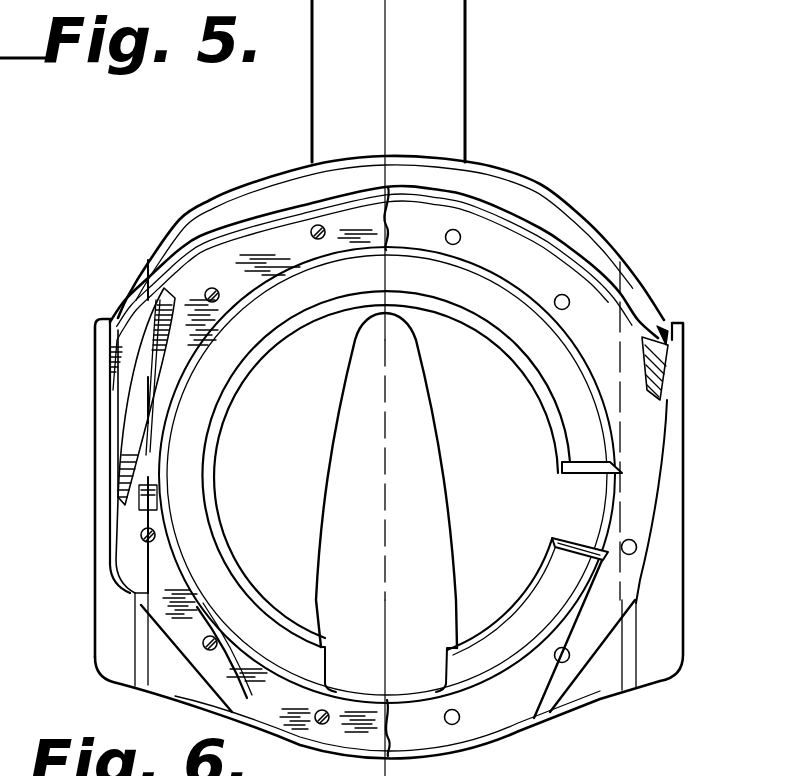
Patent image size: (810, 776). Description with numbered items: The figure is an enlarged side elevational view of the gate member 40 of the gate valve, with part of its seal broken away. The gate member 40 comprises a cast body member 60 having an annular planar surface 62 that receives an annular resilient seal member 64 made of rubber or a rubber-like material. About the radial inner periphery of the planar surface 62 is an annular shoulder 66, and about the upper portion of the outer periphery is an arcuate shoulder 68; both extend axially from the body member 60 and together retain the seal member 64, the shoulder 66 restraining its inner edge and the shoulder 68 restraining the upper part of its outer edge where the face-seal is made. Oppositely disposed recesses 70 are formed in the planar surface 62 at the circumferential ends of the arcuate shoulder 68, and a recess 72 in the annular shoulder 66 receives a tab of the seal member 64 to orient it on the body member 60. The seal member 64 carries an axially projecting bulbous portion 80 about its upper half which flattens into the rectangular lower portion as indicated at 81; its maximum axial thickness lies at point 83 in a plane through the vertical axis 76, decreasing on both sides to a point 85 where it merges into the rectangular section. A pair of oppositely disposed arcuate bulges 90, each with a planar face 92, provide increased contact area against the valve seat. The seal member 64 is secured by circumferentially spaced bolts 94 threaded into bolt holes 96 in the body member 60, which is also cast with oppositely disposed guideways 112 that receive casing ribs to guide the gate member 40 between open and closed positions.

The gate member 40 is at (582, 201).
The cast body member 60 is at (605, 240).
The annular planar surface 62 is at (572, 275).
The annular resilient seal member 64 is at (213, 240).
The annular shoulder 66 is at (576, 348).
The arcuate shoulder 68 is at (622, 300).
The recesses 70 is at (658, 371).
The recess 72 is at (580, 537).
The vertical axis 76 is at (398, 57).
The bulbous portion 80 is at (305, 204).
The merging region of bulbous portion 81 is at (147, 580).
The point of maximum axial thickness 83 is at (388, 188).
The merging point 85 is at (249, 698).
The arcuate bulges 90 is at (158, 368).
The planar face 92 is at (150, 405).
The bolts 94 is at (200, 647).
The bolt holes 96 is at (635, 541).
The guideways 112 is at (622, 411).